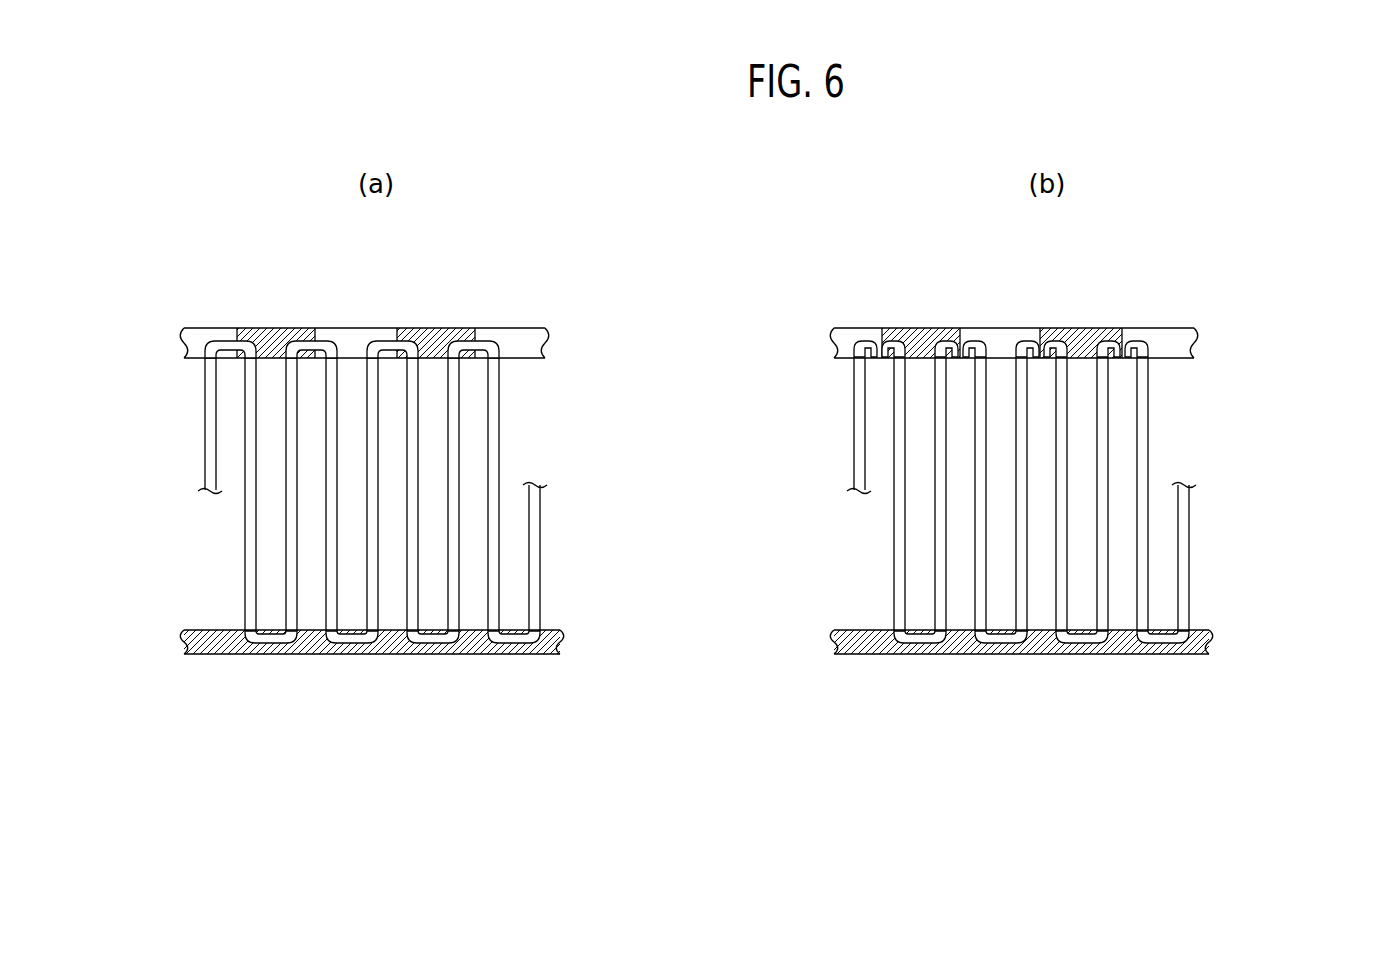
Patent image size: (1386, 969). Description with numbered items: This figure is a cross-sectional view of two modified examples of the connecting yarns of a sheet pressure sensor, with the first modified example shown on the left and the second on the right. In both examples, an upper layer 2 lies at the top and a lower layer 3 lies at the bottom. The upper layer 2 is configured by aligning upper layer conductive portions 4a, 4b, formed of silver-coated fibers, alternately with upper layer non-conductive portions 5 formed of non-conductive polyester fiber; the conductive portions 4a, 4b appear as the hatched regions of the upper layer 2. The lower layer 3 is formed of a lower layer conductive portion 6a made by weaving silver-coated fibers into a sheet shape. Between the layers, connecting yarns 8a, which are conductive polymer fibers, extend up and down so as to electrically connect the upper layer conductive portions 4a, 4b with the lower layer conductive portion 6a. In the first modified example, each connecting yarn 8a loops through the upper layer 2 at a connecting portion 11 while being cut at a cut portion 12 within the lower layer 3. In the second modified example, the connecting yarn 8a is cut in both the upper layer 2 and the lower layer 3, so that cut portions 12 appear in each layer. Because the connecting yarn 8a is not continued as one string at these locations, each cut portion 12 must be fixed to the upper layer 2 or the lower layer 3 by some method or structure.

The upper layer 2 is at (566, 341).
The lower layer 3 is at (590, 640).
The upper layer conductive portion 4a is at (275, 332).
The upper layer conductive portion 4b is at (448, 332).
The upper layer non-conductive portion 5 is at (348, 337).
The lower layer conductive portion 6a is at (552, 630).
The connecting yarn 8a is at (538, 522).
The connecting portion 11 is at (230, 347).
The cut portion 12 is at (270, 640).